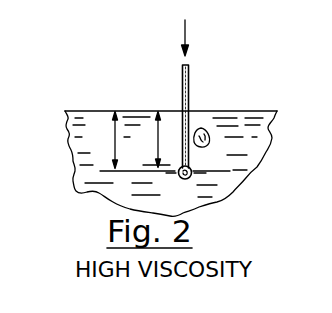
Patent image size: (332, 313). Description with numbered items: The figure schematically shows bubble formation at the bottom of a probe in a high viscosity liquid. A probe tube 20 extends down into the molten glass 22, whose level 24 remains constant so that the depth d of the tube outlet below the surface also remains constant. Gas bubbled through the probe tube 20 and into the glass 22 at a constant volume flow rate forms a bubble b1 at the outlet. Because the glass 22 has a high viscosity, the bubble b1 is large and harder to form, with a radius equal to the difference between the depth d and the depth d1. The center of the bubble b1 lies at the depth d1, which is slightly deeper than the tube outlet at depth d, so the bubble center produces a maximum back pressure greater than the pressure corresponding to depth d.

The probe tube 20 is at (182, 73).
The molten glass 22 is at (85, 133).
The level 24 is at (229, 110).
The bubble b1 is at (181, 177).
The depth d is at (150, 140).
The depth of bubble center d1 is at (162, 142).